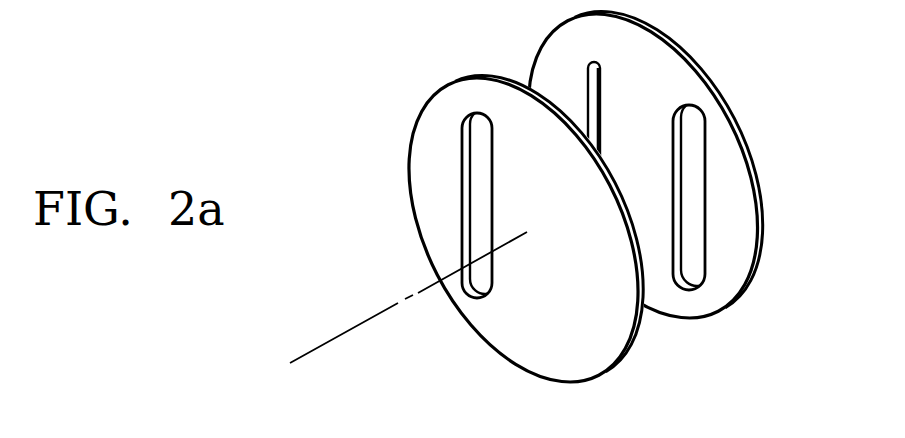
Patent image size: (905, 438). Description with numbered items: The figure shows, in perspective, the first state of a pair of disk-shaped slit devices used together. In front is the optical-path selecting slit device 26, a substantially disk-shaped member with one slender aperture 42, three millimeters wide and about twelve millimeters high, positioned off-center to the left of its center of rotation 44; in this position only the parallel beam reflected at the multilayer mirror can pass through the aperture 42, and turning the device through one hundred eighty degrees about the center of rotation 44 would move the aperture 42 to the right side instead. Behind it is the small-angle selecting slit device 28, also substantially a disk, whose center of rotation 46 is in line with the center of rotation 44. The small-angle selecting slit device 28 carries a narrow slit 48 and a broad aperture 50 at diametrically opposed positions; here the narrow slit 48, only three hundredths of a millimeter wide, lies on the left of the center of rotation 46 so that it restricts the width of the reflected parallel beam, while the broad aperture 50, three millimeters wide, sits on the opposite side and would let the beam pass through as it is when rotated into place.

The optical-path selecting slit device 26 is at (628, 359).
The small-angle selecting slit device 28 is at (740, 300).
The slender aperture 42 is at (478, 172).
The center of rotation 44 is at (364, 320).
The center of rotation 46 is at (640, 168).
The narrow slit 48 is at (588, 88).
The broad aperture 50 is at (693, 160).